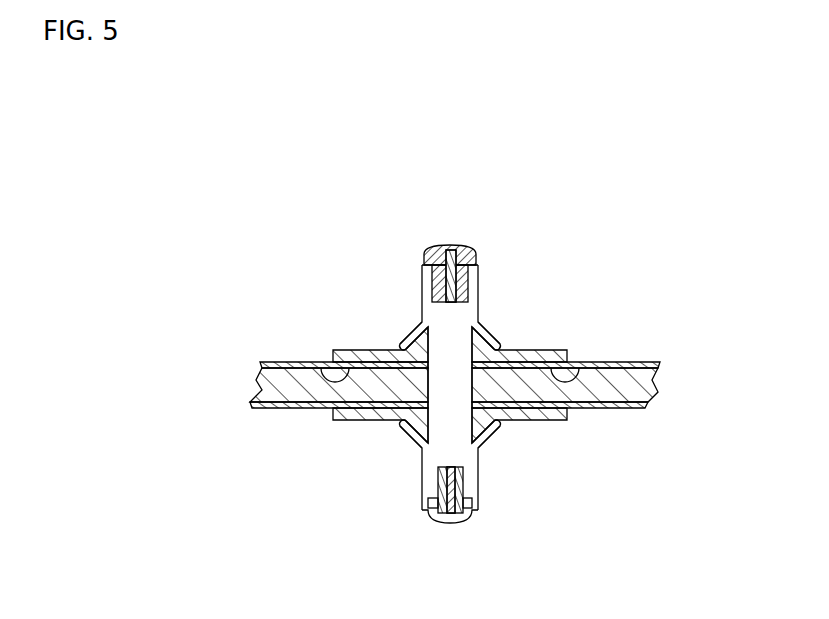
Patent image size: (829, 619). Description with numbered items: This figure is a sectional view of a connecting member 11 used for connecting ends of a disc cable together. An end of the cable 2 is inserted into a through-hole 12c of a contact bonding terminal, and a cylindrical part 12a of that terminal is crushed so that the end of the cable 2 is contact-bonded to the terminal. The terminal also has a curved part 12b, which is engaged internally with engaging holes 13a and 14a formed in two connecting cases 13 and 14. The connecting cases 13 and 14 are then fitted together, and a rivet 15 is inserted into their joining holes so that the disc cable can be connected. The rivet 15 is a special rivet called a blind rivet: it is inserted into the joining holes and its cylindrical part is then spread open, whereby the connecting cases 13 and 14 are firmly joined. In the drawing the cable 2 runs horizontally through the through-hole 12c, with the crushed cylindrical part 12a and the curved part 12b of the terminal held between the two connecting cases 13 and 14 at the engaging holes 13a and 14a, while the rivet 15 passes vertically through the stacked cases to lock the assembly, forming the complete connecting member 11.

The cable 2 is at (282, 361).
The connecting member 11 is at (452, 337).
The cylindrical part 12a is at (348, 349).
The curved part 12b is at (412, 419).
The through-hole 12c is at (318, 368).
The connecting case 13 is at (365, 363).
The engaging hole 13a is at (398, 340).
The connecting case 14 is at (547, 372).
The engaging hole 14a is at (502, 344).
The rivet 15 is at (427, 252).